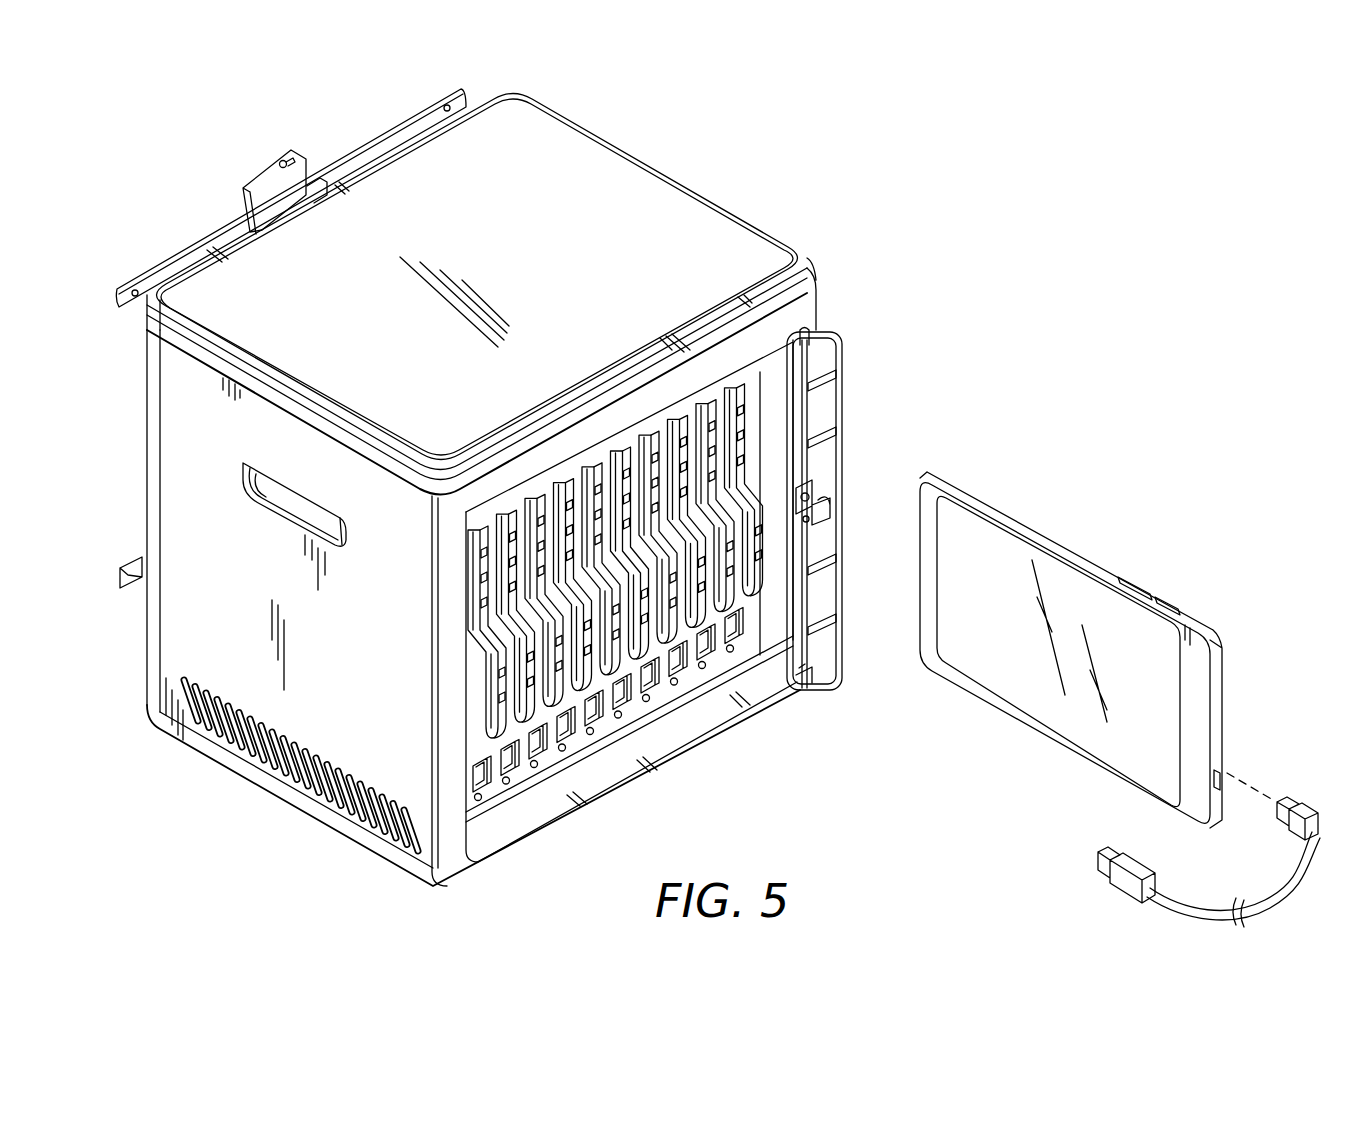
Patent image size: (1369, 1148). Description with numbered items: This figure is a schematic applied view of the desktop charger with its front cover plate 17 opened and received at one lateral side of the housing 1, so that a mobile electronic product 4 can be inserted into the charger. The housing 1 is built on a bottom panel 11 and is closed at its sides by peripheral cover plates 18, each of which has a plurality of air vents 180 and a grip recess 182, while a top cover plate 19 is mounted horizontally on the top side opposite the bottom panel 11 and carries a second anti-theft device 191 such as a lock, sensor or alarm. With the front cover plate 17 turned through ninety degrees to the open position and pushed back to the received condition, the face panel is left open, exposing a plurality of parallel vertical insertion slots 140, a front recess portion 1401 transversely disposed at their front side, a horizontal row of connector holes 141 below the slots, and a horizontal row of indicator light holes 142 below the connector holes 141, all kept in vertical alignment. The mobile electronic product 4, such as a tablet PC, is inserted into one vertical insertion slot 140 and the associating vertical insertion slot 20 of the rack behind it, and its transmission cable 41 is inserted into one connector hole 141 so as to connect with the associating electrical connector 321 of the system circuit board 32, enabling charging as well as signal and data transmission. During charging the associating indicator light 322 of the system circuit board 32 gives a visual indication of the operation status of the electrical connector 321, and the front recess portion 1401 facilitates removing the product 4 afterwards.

The housing 1 is at (140, 193).
The bottom panel 11 is at (300, 808).
The front cover plate 17 is at (828, 435).
The peripheral cover plate 18 is at (197, 563).
The air vents 180 is at (182, 403).
The grip recess 182 is at (235, 490).
The top cover plate 19 is at (812, 261).
The second anti-theft device 191 is at (257, 188).
The front recess portion 1401 is at (733, 420).
The vertical insertion slots 140 is at (587, 676).
The connector holes 141 is at (540, 748).
The indicator light holes 142 is at (506, 784).
The vertical insertion slots 20 is at (737, 598).
The system circuit board 32 is at (750, 797).
The electrical connectors 321 is at (729, 653).
The indicator lights 322 is at (676, 672).
The mobile electronic product 4 is at (1066, 573).
The transmission cable 41 is at (1297, 896).